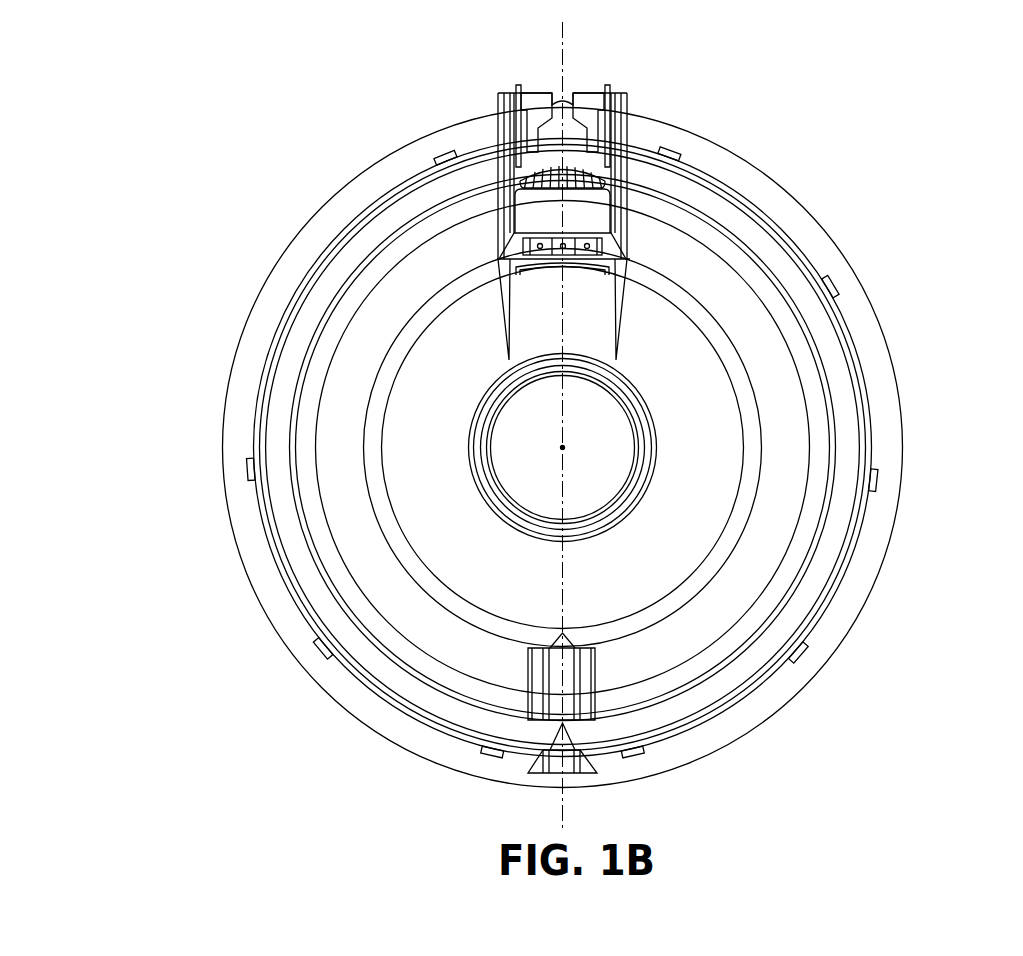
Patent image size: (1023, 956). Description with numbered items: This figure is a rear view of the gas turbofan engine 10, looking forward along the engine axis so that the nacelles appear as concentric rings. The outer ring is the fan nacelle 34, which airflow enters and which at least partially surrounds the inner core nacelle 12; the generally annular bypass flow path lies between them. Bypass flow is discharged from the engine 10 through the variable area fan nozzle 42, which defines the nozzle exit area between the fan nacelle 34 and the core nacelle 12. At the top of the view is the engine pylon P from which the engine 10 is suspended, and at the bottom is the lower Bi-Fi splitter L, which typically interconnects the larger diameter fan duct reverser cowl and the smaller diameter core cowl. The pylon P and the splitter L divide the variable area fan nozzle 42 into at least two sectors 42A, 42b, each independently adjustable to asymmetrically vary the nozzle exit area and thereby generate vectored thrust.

The gas turbofan engine 10 is at (573, 443).
The core nacelle 12 is at (493, 560).
The fan nacelle 34 is at (786, 199).
The variable area fan nozzle 42 is at (573, 448).
The sector 42A is at (229, 248).
The sector 42b is at (939, 212).
The engine pylon P is at (627, 103).
The lower Bi-Fi splitter L is at (580, 705).